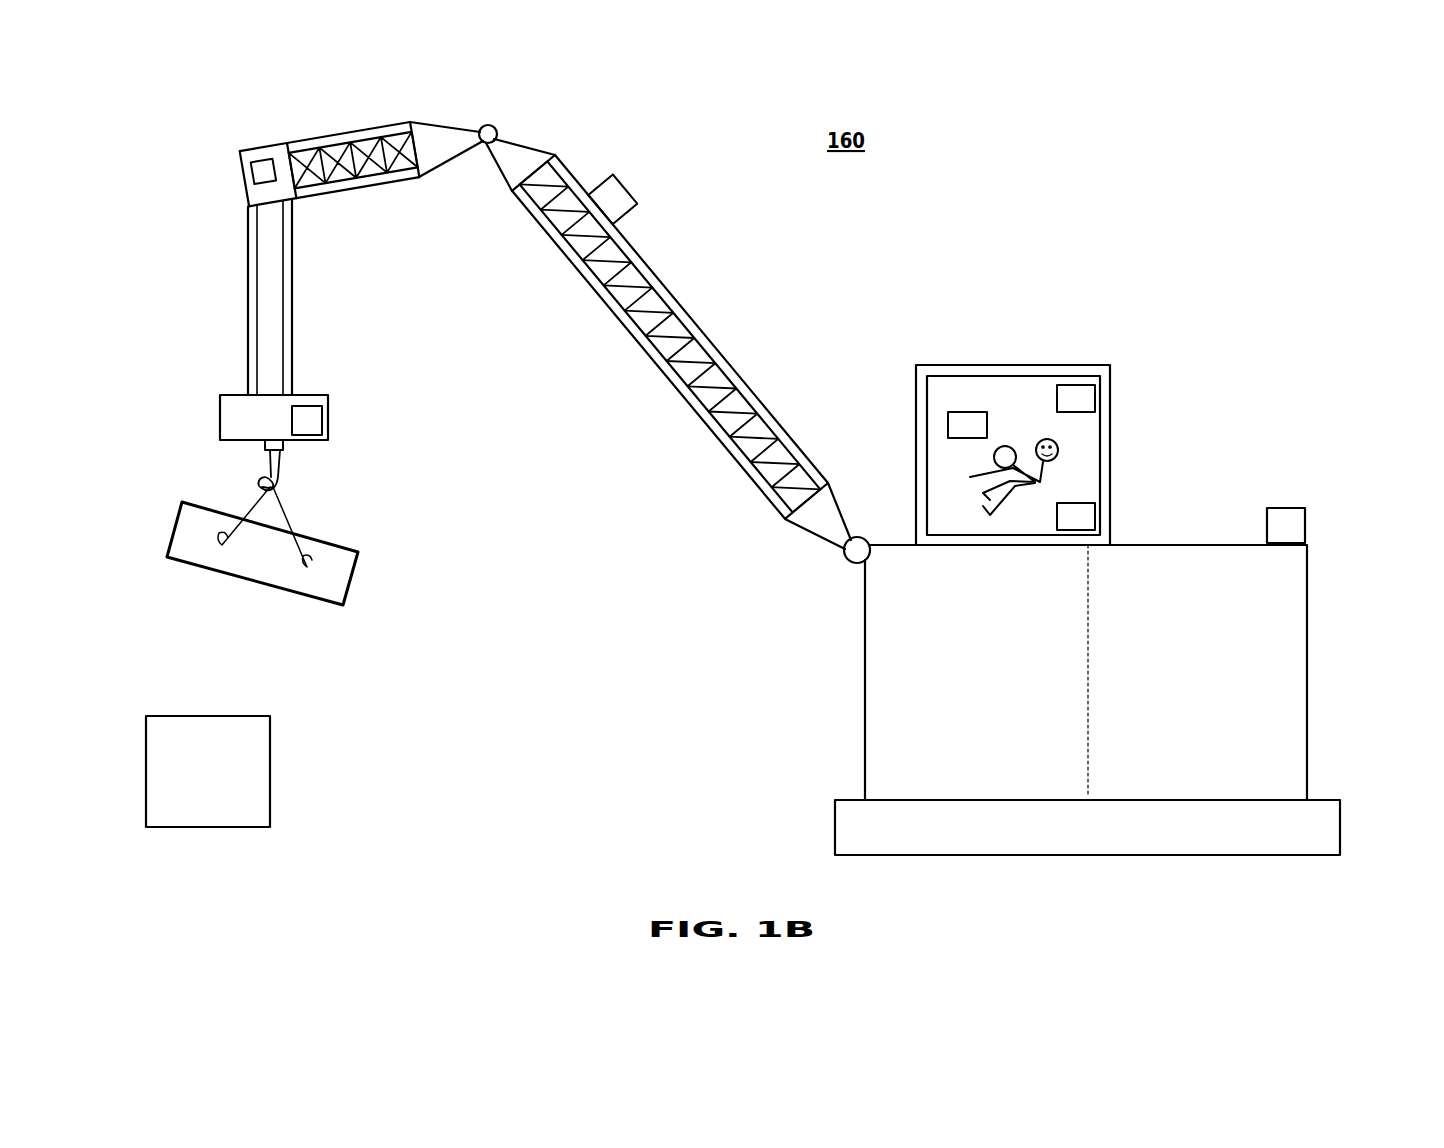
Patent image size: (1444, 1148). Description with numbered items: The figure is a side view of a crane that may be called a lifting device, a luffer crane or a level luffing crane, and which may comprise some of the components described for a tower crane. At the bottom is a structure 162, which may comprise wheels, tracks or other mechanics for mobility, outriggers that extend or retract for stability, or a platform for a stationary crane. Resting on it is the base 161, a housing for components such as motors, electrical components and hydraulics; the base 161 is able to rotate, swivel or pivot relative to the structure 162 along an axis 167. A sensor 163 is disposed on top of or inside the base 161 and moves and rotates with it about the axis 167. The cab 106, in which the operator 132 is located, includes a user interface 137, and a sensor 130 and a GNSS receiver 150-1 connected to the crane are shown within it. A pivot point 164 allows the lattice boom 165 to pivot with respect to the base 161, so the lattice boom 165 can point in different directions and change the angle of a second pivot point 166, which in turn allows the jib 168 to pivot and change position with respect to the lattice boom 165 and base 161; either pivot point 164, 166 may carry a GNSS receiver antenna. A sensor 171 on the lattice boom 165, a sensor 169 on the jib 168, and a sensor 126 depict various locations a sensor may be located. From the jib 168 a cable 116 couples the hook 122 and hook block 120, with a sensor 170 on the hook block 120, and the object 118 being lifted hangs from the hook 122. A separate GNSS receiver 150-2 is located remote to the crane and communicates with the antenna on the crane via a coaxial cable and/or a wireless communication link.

The cab 106 is at (1112, 378).
The cable 116 is at (248, 290).
The object 118 is at (175, 527).
The hook block 120 is at (220, 418).
The hook 122 is at (277, 480).
The sensor 126 is at (354, 261).
The sensor 130 is at (1078, 397).
The operator 132 is at (1040, 438).
The user interface 137 is at (965, 415).
The GNSS receiver 150-1 is at (1073, 507).
The GNSS receiver 150-2 is at (208, 771).
The base 161 is at (1285, 750).
The structure 162 is at (1313, 823).
The sensor 163 is at (1287, 522).
The pivot point 164 is at (847, 558).
The lattice boom 165 is at (640, 263).
The pivot point 166 is at (497, 128).
The axis 167 is at (1088, 767).
The jib 168 is at (313, 135).
The sensor 169 is at (267, 165).
The sensor 170 is at (302, 412).
The sensor 171 is at (612, 192).